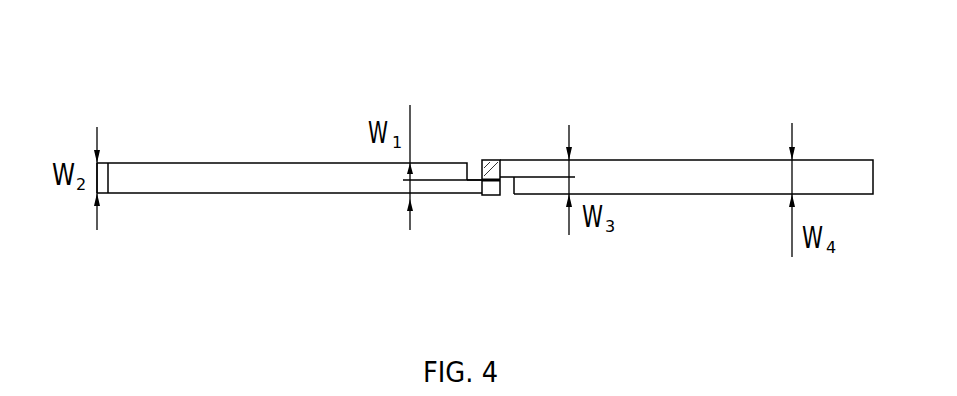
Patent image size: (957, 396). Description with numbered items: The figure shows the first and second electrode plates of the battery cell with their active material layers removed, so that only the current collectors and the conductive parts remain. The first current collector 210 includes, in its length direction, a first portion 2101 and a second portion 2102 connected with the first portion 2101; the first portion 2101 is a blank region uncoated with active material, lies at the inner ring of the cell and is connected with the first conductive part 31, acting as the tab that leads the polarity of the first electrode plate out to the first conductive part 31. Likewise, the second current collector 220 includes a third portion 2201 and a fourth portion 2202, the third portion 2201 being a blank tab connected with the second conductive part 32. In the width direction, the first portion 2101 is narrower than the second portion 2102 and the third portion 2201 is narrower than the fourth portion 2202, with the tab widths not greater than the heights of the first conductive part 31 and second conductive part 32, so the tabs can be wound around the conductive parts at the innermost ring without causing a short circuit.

The first current collector 210 is at (289, 244).
The first portion 2101 is at (454, 222).
The second portion 2102 is at (345, 195).
The second current collector 220 is at (686, 106).
The third portion 2201 is at (515, 166).
The fourth portion 2202 is at (678, 173).
The first conductive part 31 is at (488, 178).
The second conductive part 32 is at (490, 162).